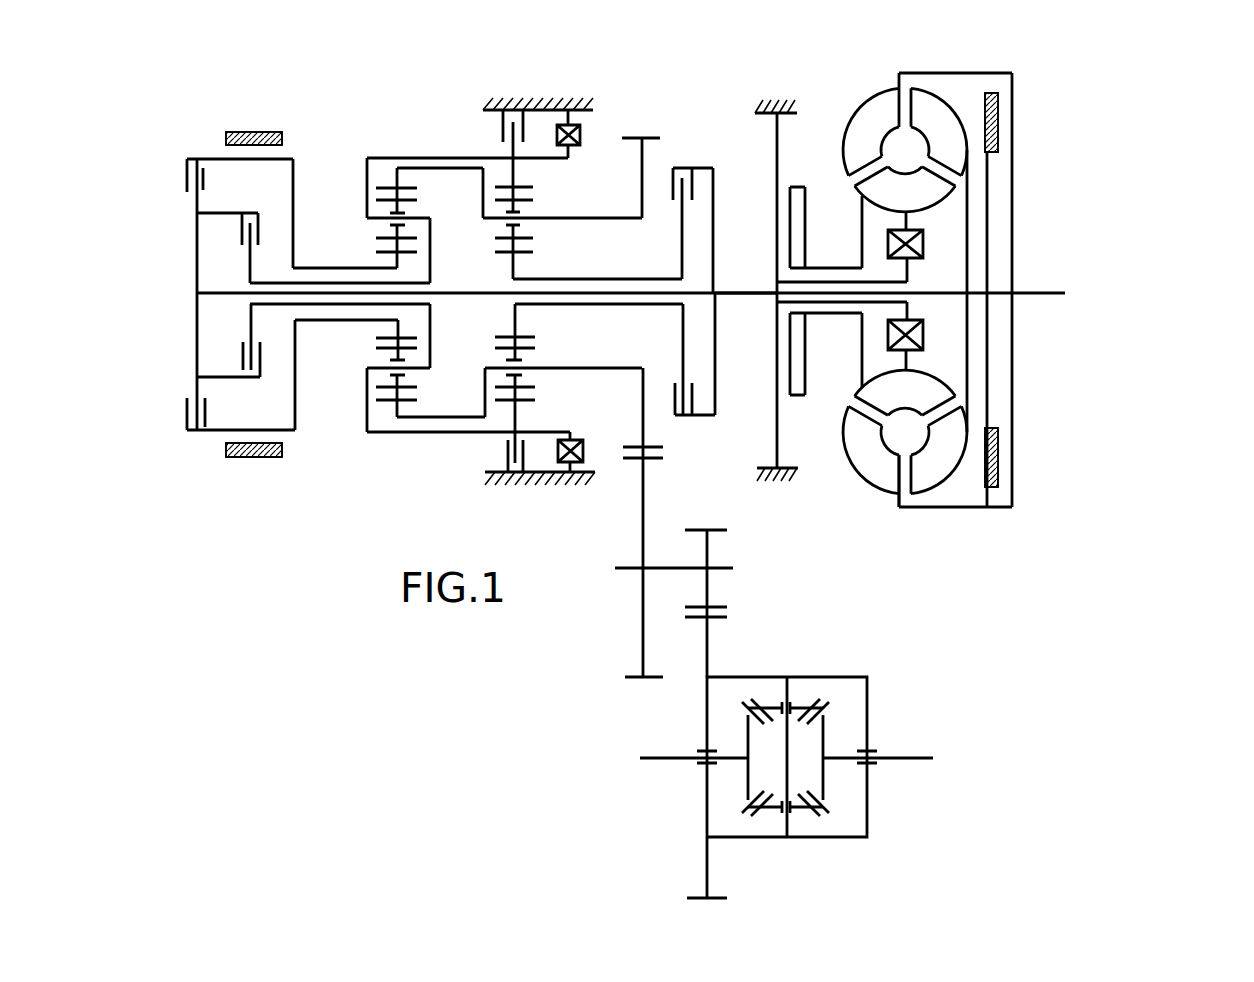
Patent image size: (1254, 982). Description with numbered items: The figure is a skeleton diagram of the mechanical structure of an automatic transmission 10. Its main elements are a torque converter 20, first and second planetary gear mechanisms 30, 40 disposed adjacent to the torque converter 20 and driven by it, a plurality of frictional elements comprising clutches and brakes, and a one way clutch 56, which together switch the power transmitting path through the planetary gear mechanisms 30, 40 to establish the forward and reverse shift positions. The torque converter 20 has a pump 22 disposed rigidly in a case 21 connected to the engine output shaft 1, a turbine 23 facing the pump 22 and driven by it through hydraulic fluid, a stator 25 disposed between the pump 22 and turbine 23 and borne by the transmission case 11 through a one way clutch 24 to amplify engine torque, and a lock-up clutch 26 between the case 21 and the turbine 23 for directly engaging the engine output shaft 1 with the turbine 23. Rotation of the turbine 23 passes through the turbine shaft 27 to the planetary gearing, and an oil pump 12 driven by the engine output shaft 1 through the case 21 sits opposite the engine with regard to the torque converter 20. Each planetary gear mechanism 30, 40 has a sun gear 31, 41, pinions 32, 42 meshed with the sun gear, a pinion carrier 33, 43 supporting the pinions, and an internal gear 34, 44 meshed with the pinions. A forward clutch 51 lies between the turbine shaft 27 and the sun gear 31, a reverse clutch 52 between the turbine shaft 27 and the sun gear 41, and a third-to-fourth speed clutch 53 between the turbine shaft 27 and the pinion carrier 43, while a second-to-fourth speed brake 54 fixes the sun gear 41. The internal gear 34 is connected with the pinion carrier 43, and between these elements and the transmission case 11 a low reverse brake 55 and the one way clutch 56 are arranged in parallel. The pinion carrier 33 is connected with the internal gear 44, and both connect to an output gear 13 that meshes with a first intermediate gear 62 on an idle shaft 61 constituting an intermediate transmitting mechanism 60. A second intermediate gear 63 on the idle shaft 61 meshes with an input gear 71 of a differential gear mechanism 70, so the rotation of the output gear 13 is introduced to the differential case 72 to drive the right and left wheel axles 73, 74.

The engine output shaft 1 is at (1047, 290).
The automatic transmission 10 is at (1118, 106).
The transmission case 11 is at (542, 109).
The oil pump 12 is at (808, 240).
The output gear 13 is at (660, 446).
The torque converter 20 is at (1018, 111).
The case 21 is at (925, 73).
The pump 22 is at (864, 97).
The turbine 23 is at (946, 98).
The one way clutch 24 is at (921, 259).
The stator 25 is at (922, 210).
The lock-up clutch 26 is at (1000, 137).
The turbine shaft 27 is at (748, 291).
The first planetary gear mechanism 30 is at (548, 188).
The sun gear 31 is at (532, 335).
The pinions 32 is at (534, 350).
The pinion carrier 33 is at (490, 367).
The internal gear 34 is at (527, 400).
The second planetary gear mechanism 40 is at (350, 187).
The sun gear 41 is at (378, 333).
The pinions 42 is at (378, 352).
The pinion carrier 43 is at (367, 405).
The internal gear 44 is at (413, 406).
The forward clutch 51 is at (683, 167).
The reverse clutch 52 is at (197, 158).
The 3-4 clutch 53 is at (252, 212).
The 2-4 brake 54 is at (248, 131).
The low reverse brake 55 is at (503, 131).
The one way clutch 56 is at (582, 133).
The intermediate transmitting mechanism 60 is at (730, 550).
The idle shaft 61 is at (665, 566).
The first intermediate gear 62 is at (660, 462).
The second intermediate gear 63 is at (722, 605).
The differential gear mechanism 70 is at (867, 662).
The input gear 71 is at (722, 620).
The differential case 72 is at (828, 676).
The wheel axle 73 is at (667, 757).
The right drive shaft 74 is at (908, 757).